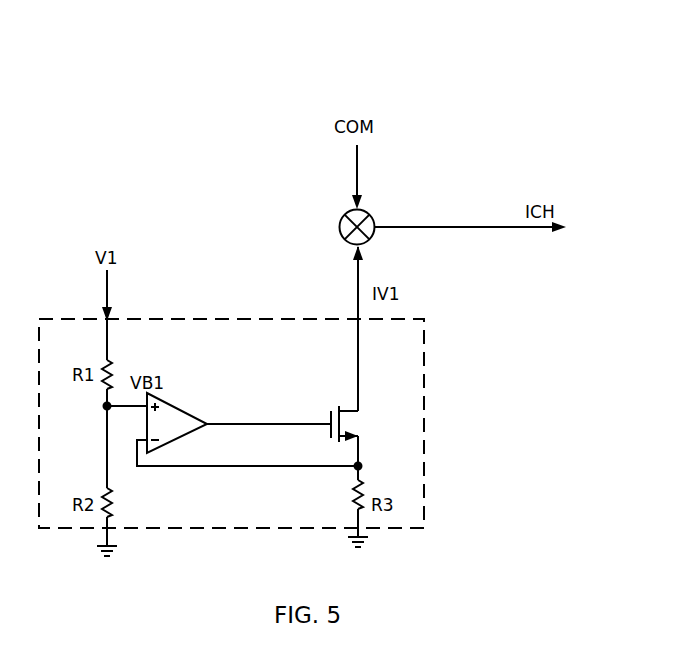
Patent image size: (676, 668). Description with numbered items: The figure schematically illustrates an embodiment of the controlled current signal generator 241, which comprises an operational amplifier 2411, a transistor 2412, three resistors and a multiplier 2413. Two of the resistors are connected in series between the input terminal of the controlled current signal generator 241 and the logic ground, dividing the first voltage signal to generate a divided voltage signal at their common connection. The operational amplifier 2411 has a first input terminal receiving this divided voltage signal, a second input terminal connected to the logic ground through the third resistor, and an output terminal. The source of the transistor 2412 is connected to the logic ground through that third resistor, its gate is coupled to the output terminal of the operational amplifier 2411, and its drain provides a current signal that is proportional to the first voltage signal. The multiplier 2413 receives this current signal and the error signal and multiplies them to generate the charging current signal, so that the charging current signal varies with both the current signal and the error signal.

The controlled current signal generator 241 is at (463, 70).
The operational amplifier 2411 is at (247, 429).
The transistor 2412 is at (361, 418).
The multiplier 2413 is at (389, 222).